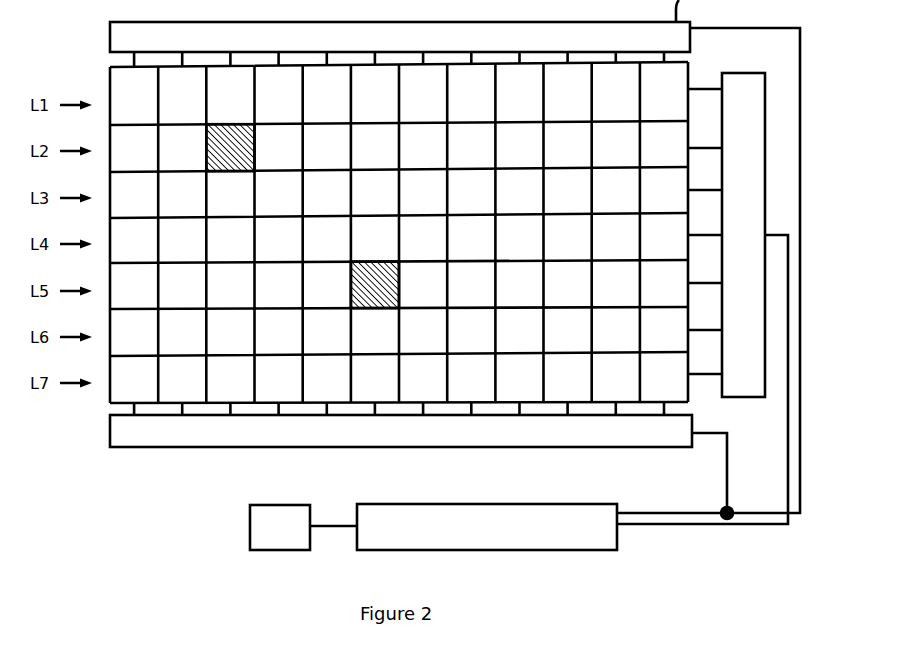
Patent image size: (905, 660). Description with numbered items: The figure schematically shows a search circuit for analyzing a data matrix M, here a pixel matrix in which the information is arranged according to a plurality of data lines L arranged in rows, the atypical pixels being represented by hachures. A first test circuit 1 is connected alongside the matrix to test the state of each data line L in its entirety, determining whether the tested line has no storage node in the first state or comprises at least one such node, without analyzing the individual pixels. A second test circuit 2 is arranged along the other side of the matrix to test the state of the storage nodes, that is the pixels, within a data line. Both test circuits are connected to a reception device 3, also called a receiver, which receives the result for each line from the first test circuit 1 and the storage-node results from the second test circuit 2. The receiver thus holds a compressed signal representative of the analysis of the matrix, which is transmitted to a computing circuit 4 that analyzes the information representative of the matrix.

The first test circuit 1 is at (726, 73).
The second test circuit 2 is at (157, 447).
The reception device 3 is at (604, 550).
The computing circuit 4 is at (250, 527).